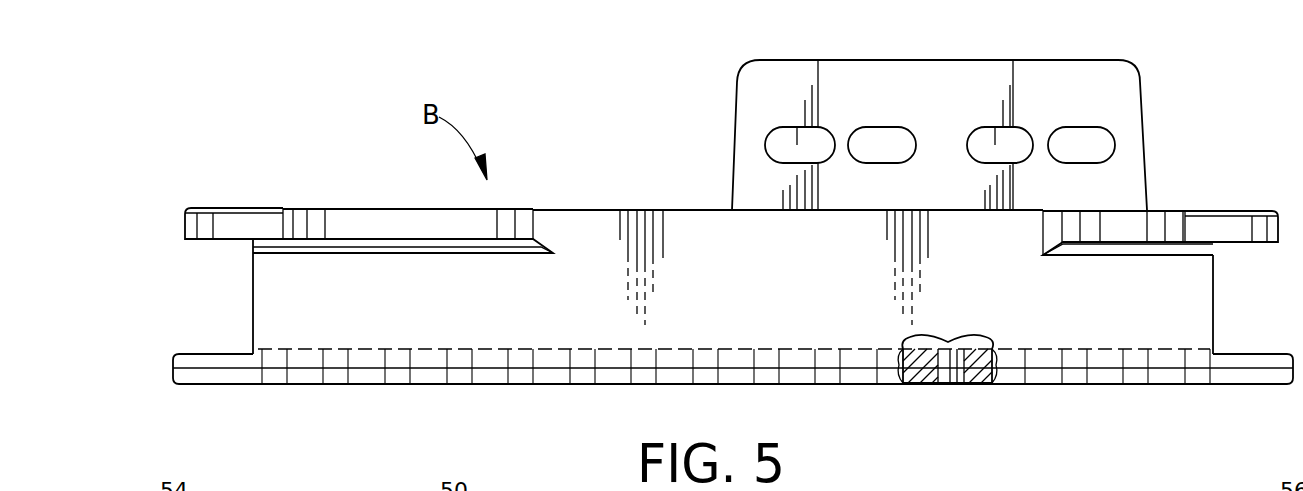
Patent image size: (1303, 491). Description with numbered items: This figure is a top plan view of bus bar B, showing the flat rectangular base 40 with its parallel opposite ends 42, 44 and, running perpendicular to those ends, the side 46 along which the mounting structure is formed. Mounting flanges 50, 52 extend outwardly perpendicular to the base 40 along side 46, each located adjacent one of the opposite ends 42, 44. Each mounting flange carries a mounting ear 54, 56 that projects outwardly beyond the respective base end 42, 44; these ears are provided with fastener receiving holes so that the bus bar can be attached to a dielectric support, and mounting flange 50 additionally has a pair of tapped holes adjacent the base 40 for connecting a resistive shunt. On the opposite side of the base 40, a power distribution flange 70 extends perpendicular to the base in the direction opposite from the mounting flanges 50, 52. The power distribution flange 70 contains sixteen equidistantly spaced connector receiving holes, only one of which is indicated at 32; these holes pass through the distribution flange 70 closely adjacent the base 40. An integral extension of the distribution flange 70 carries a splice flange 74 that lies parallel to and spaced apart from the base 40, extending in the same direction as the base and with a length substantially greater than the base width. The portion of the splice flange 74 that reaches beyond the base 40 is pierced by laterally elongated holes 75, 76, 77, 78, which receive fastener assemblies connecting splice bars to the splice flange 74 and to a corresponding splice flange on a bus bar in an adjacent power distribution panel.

The connector receiving hole 32 is at (955, 385).
The base 40 is at (557, 311).
The opposite end 42 is at (252, 290).
The opposite end 44 is at (1215, 298).
The side 46 is at (664, 210).
The mounting flange 50 is at (413, 217).
The mounting flange 52 is at (1143, 220).
The mounting ear 54 is at (228, 206).
The mounting ear 56 is at (1228, 212).
The power distribution flange 70 is at (822, 385).
The splice flange 74 is at (945, 60).
The laterally elongated hole 75 is at (770, 130).
The laterally elongated hole 76 is at (887, 125).
The laterally elongated hole 77 is at (1018, 126).
The laterally elongated hole 78 is at (1110, 127).